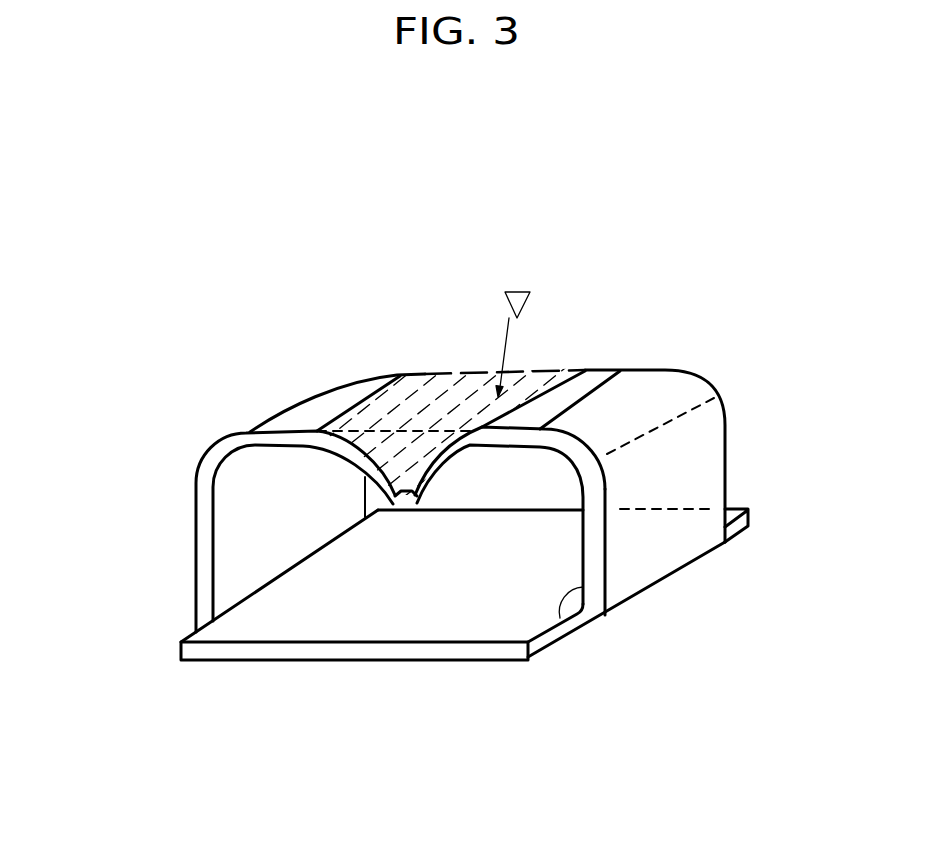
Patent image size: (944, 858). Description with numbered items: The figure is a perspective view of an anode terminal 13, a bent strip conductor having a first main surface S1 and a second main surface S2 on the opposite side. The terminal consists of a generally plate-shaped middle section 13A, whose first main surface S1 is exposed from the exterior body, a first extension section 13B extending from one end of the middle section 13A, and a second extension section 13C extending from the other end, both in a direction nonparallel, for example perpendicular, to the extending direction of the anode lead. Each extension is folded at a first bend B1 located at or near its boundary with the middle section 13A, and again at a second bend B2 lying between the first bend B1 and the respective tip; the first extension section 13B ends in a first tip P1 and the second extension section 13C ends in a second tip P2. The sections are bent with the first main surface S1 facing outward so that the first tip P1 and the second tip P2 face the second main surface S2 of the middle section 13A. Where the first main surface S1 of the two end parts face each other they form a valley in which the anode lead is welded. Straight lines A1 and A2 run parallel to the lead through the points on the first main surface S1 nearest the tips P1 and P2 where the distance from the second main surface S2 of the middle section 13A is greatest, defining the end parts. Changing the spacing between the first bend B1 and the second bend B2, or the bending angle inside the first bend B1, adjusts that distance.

The anode terminal 13 is at (468, 226).
The middle section 13A is at (515, 673).
The first extension section 13B is at (315, 345).
The second extension section 13C is at (641, 298).
The straight line A1 is at (326, 420).
The straight line A2 is at (580, 405).
The first bend B1 is at (224, 595).
The second bend B2 is at (309, 390).
The first tip P1 is at (401, 508).
The second tip P2 is at (413, 508).
The first main surface S1 is at (361, 396).
The second main surface S2 is at (486, 632).